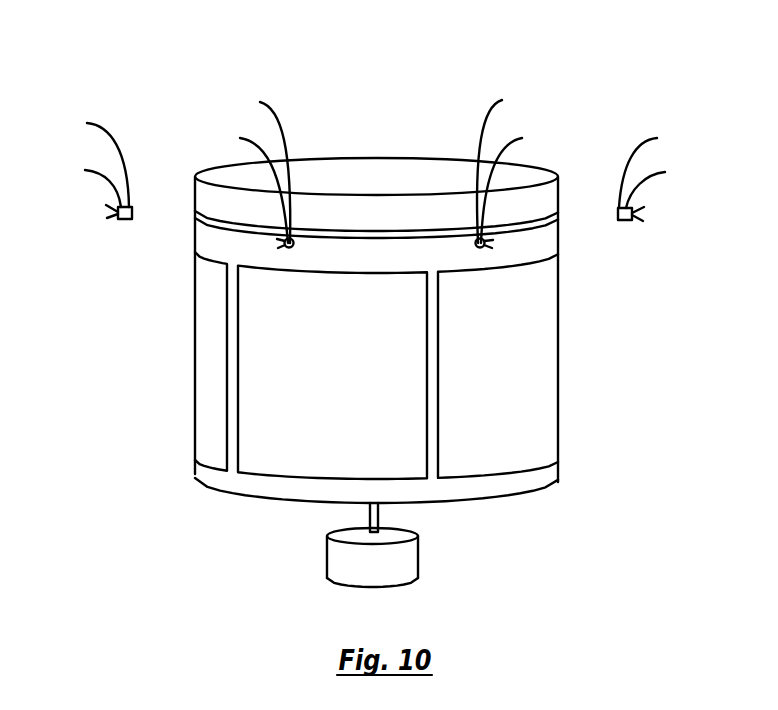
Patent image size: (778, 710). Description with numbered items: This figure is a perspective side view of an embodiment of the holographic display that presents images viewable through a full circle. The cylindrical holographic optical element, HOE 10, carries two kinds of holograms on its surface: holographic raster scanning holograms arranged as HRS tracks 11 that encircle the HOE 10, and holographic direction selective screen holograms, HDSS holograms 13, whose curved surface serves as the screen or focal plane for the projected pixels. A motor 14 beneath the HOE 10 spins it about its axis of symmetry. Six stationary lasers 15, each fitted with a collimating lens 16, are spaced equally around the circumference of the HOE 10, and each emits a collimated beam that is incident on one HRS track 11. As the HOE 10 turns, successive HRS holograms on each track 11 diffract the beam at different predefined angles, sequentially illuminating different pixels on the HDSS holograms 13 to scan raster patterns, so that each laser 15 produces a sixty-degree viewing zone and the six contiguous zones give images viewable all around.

The holographic optical element (HOE) 10 is at (548, 487).
The HRS track 11 is at (194, 215).
The HDSS hologram 13 is at (268, 473).
The motor 14 is at (420, 563).
The laser 15 is at (371, 187).
The collimating lens 16 is at (365, 163).